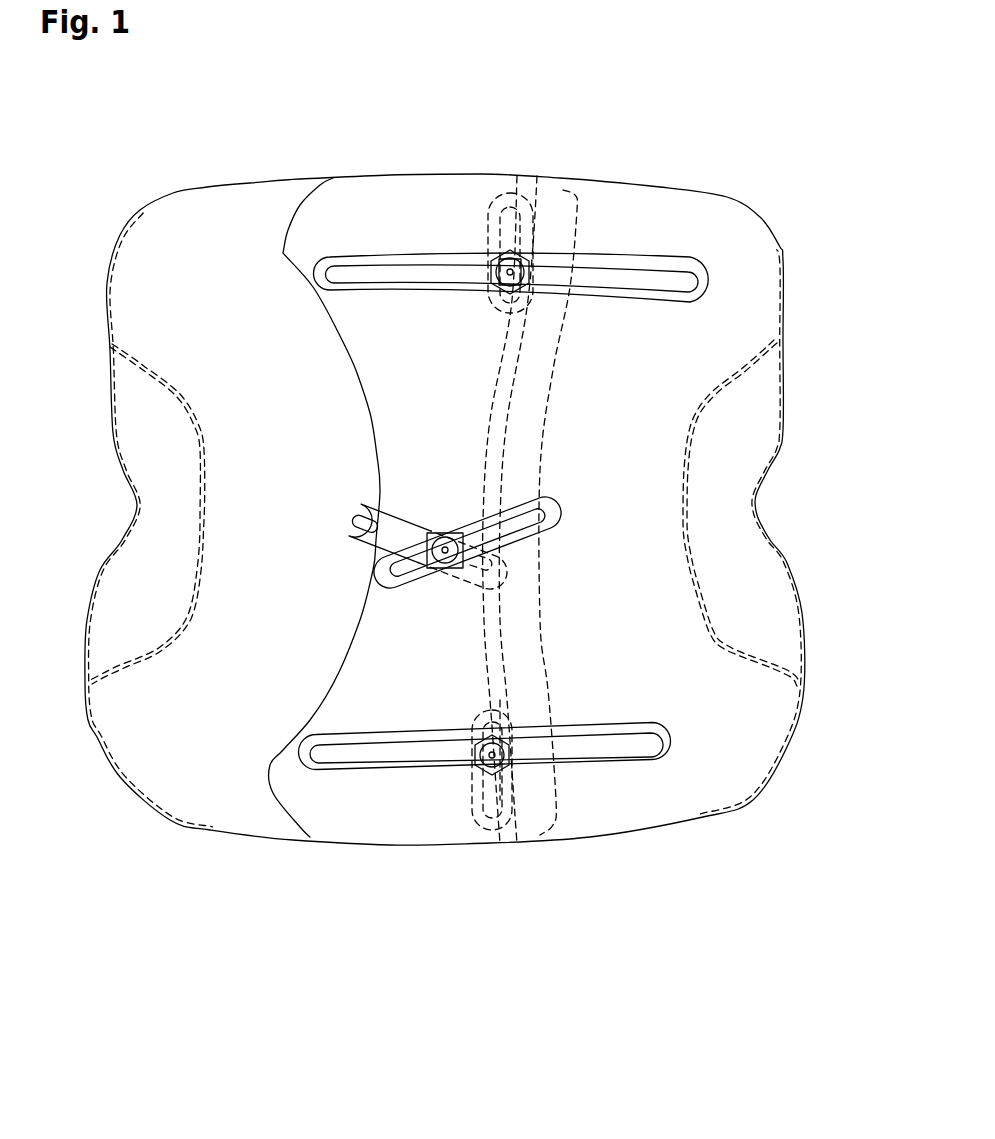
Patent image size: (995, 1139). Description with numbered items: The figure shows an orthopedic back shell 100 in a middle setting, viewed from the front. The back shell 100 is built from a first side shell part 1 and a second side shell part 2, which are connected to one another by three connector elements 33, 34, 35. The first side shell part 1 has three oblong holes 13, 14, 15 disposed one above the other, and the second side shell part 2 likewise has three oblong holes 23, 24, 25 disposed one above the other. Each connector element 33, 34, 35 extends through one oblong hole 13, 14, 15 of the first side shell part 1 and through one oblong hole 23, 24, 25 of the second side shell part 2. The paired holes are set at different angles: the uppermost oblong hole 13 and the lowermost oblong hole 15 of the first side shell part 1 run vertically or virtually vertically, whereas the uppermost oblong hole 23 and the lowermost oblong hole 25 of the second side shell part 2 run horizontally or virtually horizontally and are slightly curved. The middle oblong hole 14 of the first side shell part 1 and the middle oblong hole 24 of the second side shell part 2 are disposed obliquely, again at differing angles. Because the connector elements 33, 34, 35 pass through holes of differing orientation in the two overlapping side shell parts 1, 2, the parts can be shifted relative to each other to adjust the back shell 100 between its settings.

The orthopedic back shell 100 is at (592, 1018).
The first side shell part 1 is at (153, 253).
The second side shell part 2 is at (718, 238).
The uppermost oblong hole of the first side shell part 13 is at (507, 210).
The middle oblong hole of the first side shell part 14 is at (360, 520).
The lowermost oblong hole of the first side shell part 15 is at (490, 793).
The uppermost oblong hole of the second side shell part 23 is at (683, 285).
The middle oblong hole of the second side shell part 24 is at (520, 522).
The lowermost oblong hole of the second side shell part 25 is at (630, 743).
The connector element 33 is at (533, 253).
The connector element 34 is at (435, 540).
The connector element 35 is at (498, 758).